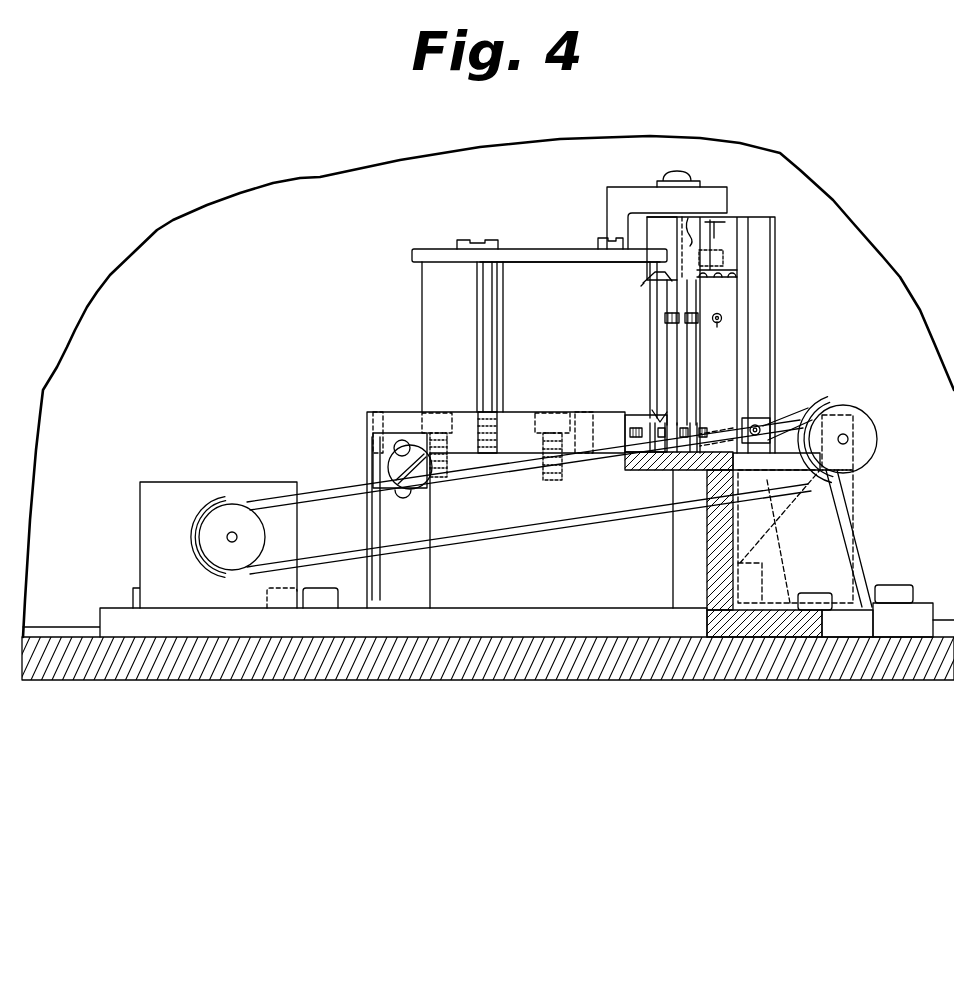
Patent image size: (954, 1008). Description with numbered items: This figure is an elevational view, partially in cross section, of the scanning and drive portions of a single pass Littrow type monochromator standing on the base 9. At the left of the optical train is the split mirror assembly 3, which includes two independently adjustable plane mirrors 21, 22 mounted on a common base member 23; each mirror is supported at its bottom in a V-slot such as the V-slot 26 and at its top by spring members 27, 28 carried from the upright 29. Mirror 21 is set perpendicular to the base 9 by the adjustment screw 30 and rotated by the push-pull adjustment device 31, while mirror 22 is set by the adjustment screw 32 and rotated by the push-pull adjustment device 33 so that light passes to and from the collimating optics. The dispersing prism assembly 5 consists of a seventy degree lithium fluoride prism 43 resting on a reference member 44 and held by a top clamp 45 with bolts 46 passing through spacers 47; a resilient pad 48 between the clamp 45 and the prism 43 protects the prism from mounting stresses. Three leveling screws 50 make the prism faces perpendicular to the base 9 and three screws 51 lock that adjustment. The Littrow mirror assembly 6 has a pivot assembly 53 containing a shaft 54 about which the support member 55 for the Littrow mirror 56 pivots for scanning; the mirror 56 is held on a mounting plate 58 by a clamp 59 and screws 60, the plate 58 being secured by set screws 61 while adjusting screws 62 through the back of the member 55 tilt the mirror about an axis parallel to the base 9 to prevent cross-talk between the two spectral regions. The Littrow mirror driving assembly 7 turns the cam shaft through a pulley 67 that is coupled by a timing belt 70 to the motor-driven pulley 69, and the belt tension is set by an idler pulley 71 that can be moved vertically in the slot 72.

The split mirror assembly 3 is at (614, 320).
The dispersing prism assembly 5 is at (362, 286).
The Littrow mirror assembly 6 is at (782, 253).
The Littrow mirror driving assembly 7 is at (884, 470).
The base 9 is at (546, 677).
The plane mirror 21 is at (675, 331).
The plane mirror 22 is at (655, 354).
The common base member 23 is at (707, 553).
The V-slot 26 is at (654, 412).
The spring member 27 is at (722, 274).
The spring member 28 is at (645, 278).
The upright 29 is at (690, 352).
The adjustment screw 30 is at (718, 332).
The push-pull adjustment device 31 is at (760, 426).
The adjustment screw 32 is at (668, 316).
The push-pull adjustment device 33 is at (630, 431).
The lithium fluoride prism 43 is at (422, 313).
The reference member 44 is at (367, 424).
The top clamp 45 is at (513, 250).
The bolts 46 is at (475, 240).
The spacers 47 is at (480, 336).
The pad 48 is at (523, 264).
The leveling screws 50 is at (382, 412).
The locking screws 51 is at (440, 412).
The pivot assembly 53 is at (620, 187).
The shaft 54 is at (677, 172).
The support member 55 is at (745, 216).
The Littrow mirror 56 is at (690, 255).
The mounting plate 58 is at (718, 222).
The clamp 59 is at (681, 232).
The screws 60 is at (689, 218).
The set screws 61 is at (716, 253).
The adjusting screws 62 is at (716, 232).
The pulley 67 is at (872, 437).
The pulley 69 is at (204, 543).
The timing belt 70 is at (514, 476).
The idler pulley 71 is at (390, 466).
The slot 72 is at (414, 498).